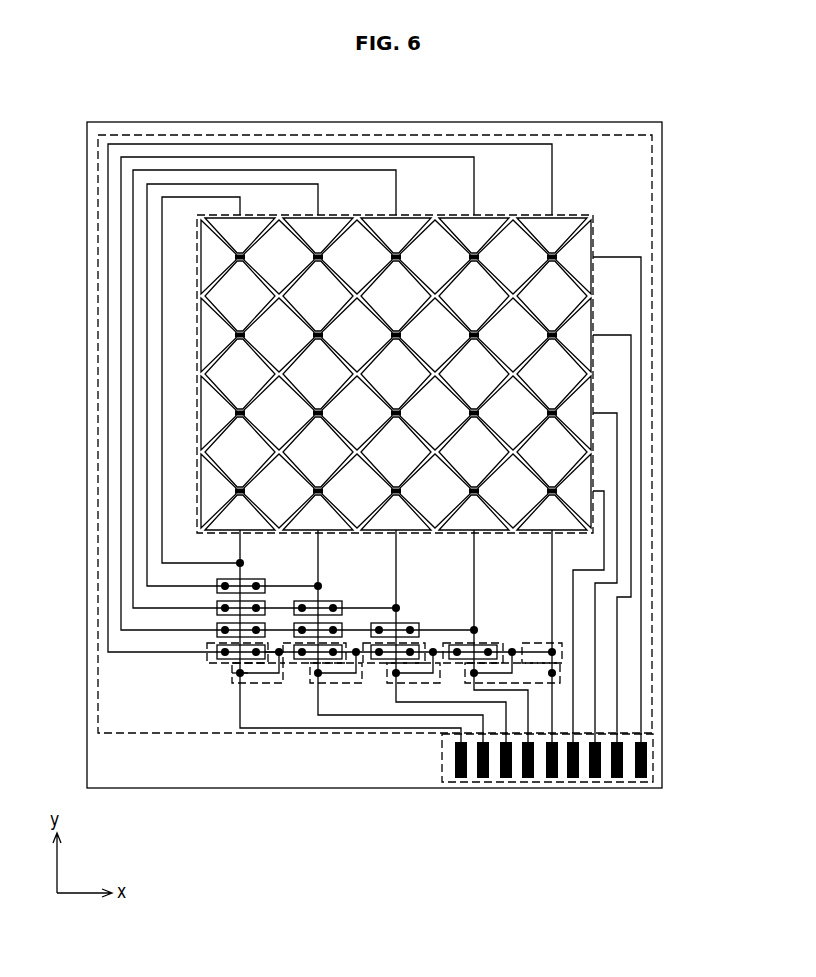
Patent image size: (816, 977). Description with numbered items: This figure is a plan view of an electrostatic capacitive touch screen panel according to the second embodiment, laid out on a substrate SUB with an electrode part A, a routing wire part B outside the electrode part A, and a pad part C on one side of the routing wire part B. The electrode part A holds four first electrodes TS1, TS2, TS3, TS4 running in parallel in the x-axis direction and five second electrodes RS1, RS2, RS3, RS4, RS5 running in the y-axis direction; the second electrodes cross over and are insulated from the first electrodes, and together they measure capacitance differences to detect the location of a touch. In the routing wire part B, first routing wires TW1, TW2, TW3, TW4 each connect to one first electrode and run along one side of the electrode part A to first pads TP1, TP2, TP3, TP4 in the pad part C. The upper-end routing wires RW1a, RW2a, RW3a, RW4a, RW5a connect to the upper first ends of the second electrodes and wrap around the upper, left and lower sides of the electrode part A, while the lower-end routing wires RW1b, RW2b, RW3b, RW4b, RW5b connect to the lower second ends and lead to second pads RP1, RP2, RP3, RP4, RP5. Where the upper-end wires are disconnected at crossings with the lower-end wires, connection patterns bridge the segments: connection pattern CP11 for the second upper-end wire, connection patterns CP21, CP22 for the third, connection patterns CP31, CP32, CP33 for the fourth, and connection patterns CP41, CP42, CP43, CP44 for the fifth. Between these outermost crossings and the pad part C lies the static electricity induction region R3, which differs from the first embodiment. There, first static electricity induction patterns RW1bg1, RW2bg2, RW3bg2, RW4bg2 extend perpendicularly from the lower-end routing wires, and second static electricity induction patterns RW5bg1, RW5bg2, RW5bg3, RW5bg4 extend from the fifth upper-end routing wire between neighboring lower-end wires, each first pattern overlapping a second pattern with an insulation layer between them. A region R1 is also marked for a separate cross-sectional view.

The substrate SUB is at (662, 718).
The electrode part A is at (593, 214).
The routing wire part B is at (653, 690).
The pad part C is at (653, 757).
The first electrode TS1 is at (197, 257).
The first electrode TS2 is at (197, 335).
The first electrode TS3 is at (197, 413).
The first electrode TS4 is at (197, 491).
The second electrode RS1 is at (246, 213).
The second electrode RS2 is at (324, 213).
The second electrode RS3 is at (402, 213).
The second electrode RS4 is at (480, 213).
The second electrode RS5 is at (558, 213).
The first 2-1 routing wire RW1a is at (162, 512).
The second 2-1 routing wire RW2a is at (147, 546).
The third 2-1 routing wire RW3a is at (133, 578).
The fourth 2-1 routing wire RW4a is at (121, 612).
The fifth 2-1 routing wire RW5a is at (108, 648).
The first 2-2 routing wire RW1b is at (457, 740).
The second 2-2 routing wire RW2b is at (480, 740).
The third 2-2 routing wire RW3b is at (502, 740).
The fourth 2-2 routing wire RW4b is at (524, 740).
The fifth 2-2 routing wire RW5b is at (547, 740).
The first routing wire TW1 is at (641, 383).
The first routing wire TW2 is at (631, 430).
The first routing wire TW3 is at (617, 476).
The first routing wire TW4 is at (604, 520).
The connection pattern CP11 is at (258, 580).
The connection pattern CP21 is at (262, 603).
The connection pattern CP22 is at (330, 603).
The connection pattern CP31 is at (218, 636).
The connection pattern CP32 is at (337, 623).
The connection pattern CP33 is at (412, 623).
The connection pattern CP41 is at (224, 660).
The connection pattern CP42 is at (305, 660).
The connection pattern CP43 is at (417, 645).
The connection pattern CP44 is at (490, 645).
The first static electricity induction pattern RW1bg1 is at (283, 672).
The second static electricity induction pattern RW5bg1 is at (320, 676).
The first static electricity induction pattern RW2bg2 is at (350, 663).
The second static electricity induction pattern RW5bg2 is at (398, 676).
The first static electricity induction pattern RW3bg2 is at (436, 662).
The second static electricity induction pattern RW5bg3 is at (478, 676).
The first static electricity induction pattern RW4bg2 is at (513, 662).
The second static electricity induction pattern RW5bg4 is at (558, 660).
The region R1 is at (240, 668).
The static electricity induction region R3 is at (262, 660).
The second pad RP1 is at (456, 762).
The second pad RP2 is at (478, 778).
The second pad RP3 is at (500, 778).
The second pad RP4 is at (523, 778).
The second pad RP5 is at (551, 780).
The first pad TP1 is at (641, 780).
The first pad TP2 is at (617, 780).
The first pad TP3 is at (595, 780).
The first pad TP4 is at (573, 780).